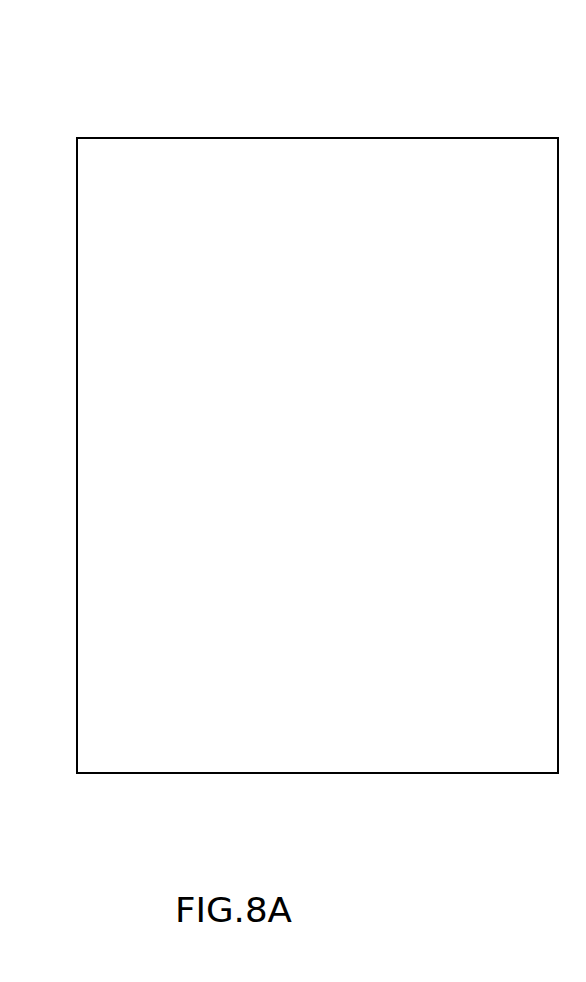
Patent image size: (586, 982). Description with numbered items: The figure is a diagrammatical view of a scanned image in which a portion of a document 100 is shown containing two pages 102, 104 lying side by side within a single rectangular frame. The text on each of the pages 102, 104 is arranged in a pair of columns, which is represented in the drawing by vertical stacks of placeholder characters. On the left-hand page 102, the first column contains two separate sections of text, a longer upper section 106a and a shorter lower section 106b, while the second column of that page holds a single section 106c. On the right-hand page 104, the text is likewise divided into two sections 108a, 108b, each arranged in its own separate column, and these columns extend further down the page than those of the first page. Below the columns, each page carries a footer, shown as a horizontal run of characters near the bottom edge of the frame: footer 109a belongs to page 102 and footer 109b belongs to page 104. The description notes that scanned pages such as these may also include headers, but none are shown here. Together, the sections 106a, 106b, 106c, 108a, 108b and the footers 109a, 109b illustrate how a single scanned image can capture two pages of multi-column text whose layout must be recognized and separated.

The document 100 is at (278, 105).
The page 102 is at (167, 160).
The page 104 is at (421, 149).
The section 106a is at (138, 197).
The section 106b is at (125, 702).
The section 106c is at (267, 503).
The section 108a is at (360, 572).
The section 108b is at (485, 185).
The footer 109a is at (230, 760).
The footer 109b is at (453, 748).